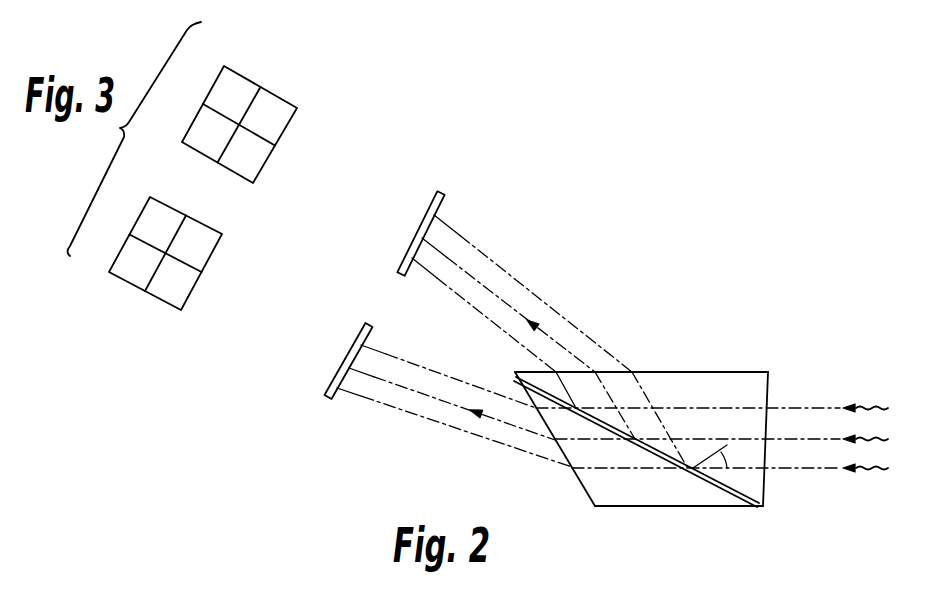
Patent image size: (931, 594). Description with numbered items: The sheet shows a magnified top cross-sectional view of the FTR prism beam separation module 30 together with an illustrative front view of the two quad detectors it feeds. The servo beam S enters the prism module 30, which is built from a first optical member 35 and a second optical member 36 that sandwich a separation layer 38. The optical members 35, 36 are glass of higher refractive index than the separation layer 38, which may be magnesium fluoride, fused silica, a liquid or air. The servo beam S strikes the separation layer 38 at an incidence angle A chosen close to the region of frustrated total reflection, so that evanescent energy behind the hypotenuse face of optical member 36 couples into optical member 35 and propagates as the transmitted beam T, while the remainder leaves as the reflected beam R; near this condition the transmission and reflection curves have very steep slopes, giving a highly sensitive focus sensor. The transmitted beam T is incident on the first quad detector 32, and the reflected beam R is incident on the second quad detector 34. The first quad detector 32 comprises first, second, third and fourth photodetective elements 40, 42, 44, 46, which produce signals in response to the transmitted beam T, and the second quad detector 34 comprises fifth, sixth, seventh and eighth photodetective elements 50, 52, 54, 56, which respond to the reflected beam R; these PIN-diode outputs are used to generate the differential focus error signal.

In FIG. 2, the FTR prism beam separation module 30 is at (668, 434).
In FIG. 3, the first quad detector 32 is at (188, 268).
In FIG. 2, the first quad detector 32 is at (331, 401).
In FIG. 3, the second quad detector 34 is at (263, 114).
In FIG. 2, the second quad detector 34 is at (443, 197).
In FIG. 2, the first optical member 35 is at (655, 506).
In FIG. 2, the second optical member 36 is at (727, 372).
In FIG. 2, the separation layer 38 is at (742, 502).
In FIG. 3, the first photodetective element 40 is at (175, 303).
In FIG. 3, the second photodetective element 42 is at (128, 275).
In FIG. 3, the third photodetective element 44 is at (217, 238).
In FIG. 3, the fourth photodetective element 46 is at (168, 209).
In FIG. 3, the fifth photodetective element 50 is at (278, 101).
In FIG. 3, the sixth photodetective element 52 is at (235, 76).
In FIG. 3, the seventh photodetective element 54 is at (260, 160).
In FIG. 3, the eighth photodetective element 56 is at (198, 144).
In FIG. 2, the incidence angle A is at (728, 456).
In FIG. 2, the reflected beam R is at (533, 303).
In FIG. 2, the servo beam S is at (712, 438).
In FIG. 2, the transmitted beam T is at (458, 426).